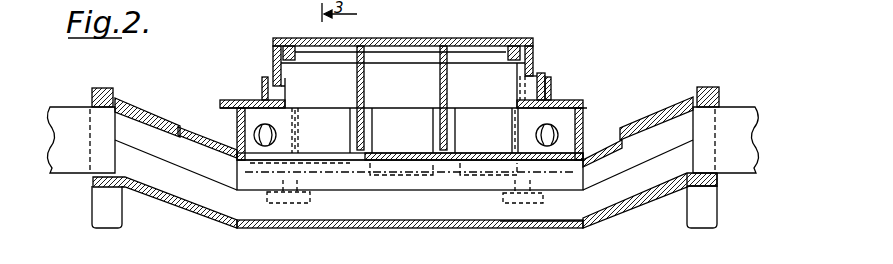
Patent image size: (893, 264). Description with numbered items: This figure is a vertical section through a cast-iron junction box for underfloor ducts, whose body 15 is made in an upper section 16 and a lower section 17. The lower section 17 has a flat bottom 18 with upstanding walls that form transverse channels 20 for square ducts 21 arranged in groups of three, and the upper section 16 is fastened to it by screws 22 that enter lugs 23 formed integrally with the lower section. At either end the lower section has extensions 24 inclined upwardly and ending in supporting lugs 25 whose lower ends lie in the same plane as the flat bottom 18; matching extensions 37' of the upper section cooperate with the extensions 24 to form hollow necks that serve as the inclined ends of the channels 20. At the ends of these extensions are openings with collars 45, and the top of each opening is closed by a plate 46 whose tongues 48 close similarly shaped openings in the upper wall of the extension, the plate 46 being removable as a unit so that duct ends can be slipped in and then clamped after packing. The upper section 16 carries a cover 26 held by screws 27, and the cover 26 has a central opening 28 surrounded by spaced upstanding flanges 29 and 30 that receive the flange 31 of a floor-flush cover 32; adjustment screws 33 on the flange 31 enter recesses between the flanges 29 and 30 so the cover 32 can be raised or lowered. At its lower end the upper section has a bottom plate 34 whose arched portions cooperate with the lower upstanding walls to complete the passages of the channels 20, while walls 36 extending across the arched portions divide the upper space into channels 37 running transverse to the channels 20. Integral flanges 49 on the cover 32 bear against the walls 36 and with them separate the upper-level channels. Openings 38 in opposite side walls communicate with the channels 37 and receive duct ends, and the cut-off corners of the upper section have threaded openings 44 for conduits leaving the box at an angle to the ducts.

The body 15 is at (584, 117).
The upper section 16 is at (230, 127).
The lower section 17 is at (553, 227).
The flat bottom 18 is at (385, 230).
The transverse channels 20 is at (433, 203).
The ducts 21 is at (738, 113).
The screws 22 is at (287, 197).
The lugs 23 is at (277, 203).
The extensions 24 is at (627, 203).
The supporting lugs 25 is at (697, 222).
The cover 26 is at (572, 106).
The screws 27 is at (262, 100).
The central opening 28 is at (295, 89).
The upstanding flange 29 is at (514, 68).
The upstanding flange 30 is at (541, 73).
The flange 31 is at (272, 62).
The cover 32 is at (273, 51).
The adjustment screws 33 is at (548, 75).
The bottom plate 34 is at (403, 154).
The walls 36 is at (460, 128).
The channels 37 is at (500, 186).
The extensions 37' is at (614, 126).
The openings 38 is at (330, 165).
The threaded openings 44 is at (265, 140).
The collars 45 is at (700, 187).
The plate 46 is at (711, 92).
The tongues 48 is at (660, 110).
The integral flanges 49 is at (365, 68).